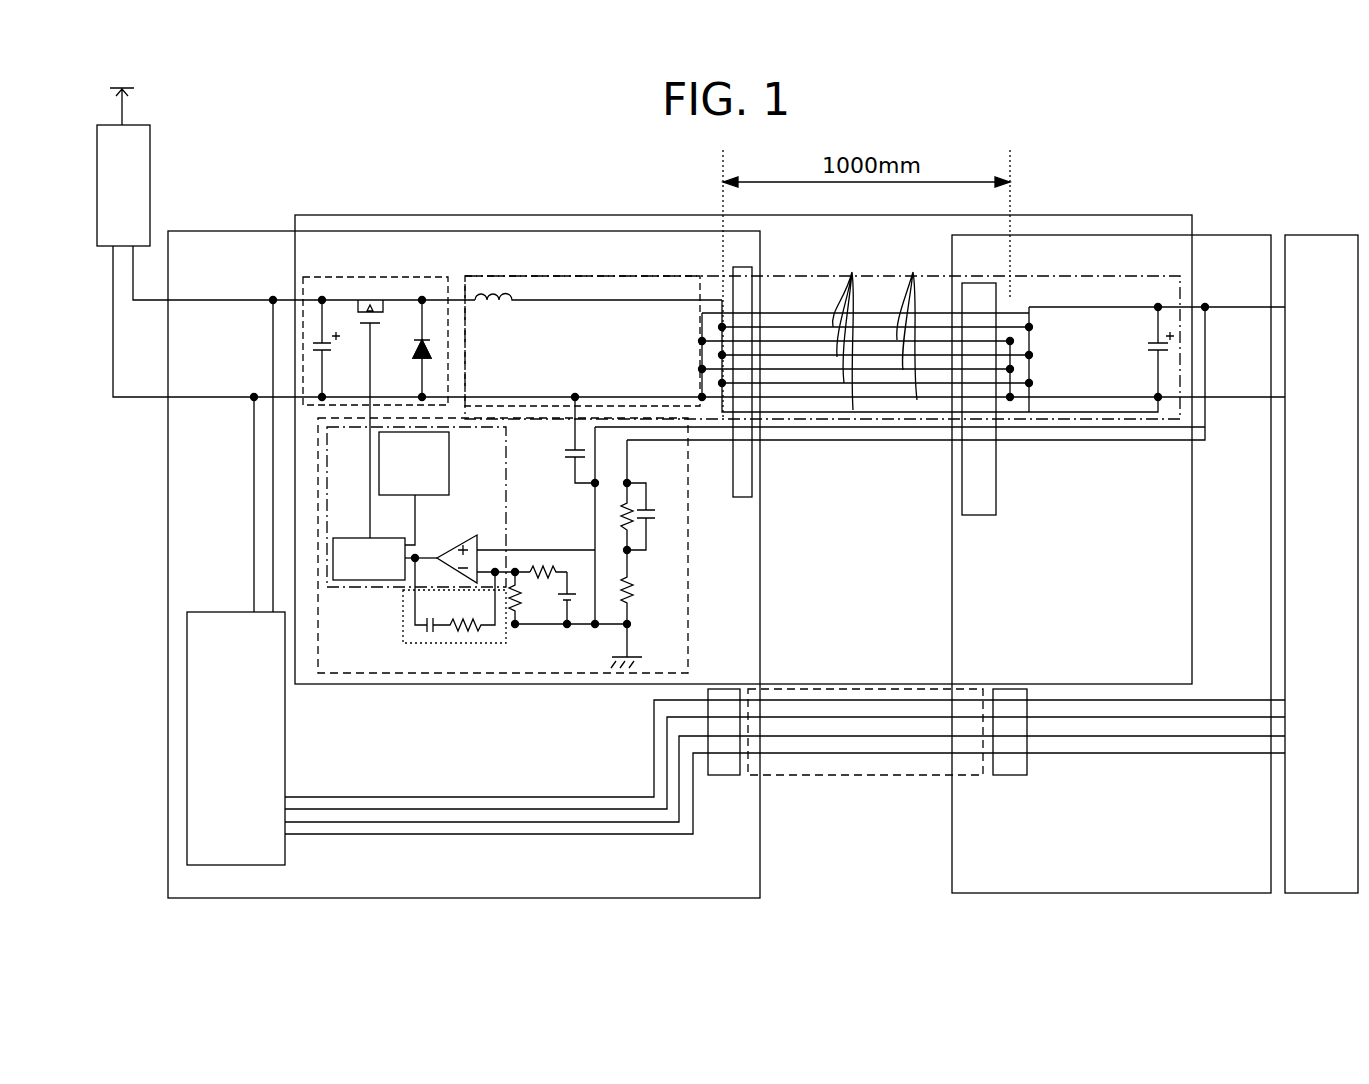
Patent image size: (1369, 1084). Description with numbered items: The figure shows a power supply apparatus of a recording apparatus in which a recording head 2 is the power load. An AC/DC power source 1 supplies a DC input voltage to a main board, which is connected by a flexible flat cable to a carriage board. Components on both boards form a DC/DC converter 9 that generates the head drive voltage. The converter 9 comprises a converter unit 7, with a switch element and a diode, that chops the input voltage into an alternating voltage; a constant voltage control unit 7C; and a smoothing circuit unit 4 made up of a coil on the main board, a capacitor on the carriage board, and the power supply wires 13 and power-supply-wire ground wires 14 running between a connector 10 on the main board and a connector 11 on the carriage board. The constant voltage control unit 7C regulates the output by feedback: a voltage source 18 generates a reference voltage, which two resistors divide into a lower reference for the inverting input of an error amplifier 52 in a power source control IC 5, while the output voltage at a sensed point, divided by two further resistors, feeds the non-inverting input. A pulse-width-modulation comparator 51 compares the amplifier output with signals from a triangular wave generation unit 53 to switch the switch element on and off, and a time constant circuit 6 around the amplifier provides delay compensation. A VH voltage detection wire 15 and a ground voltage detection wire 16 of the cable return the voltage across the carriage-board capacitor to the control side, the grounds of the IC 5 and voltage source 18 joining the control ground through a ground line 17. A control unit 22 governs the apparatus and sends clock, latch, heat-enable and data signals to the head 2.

The AC/DC power source 1 is at (97, 197).
The recording head 2 is at (1320, 235).
The smoothing circuit unit 4 is at (607, 278).
The power source control IC 5 is at (340, 587).
The time constant circuit 6 is at (403, 628).
The converter unit 7 is at (432, 278).
The constant voltage control unit 7C is at (440, 673).
The DC/DC converter 9 is at (515, 215).
The connector 10 is at (755, 480).
The connector 11 is at (962, 498).
The power supply wires 13 is at (850, 328).
The power-supply-wire ground wires 14 is at (911, 323).
The VH voltage detection wire 15 is at (855, 440).
The ground voltage detection wire 16 is at (905, 427).
The ground line 17 is at (567, 626).
The voltage source 18 is at (560, 598).
The control unit 22 is at (215, 612).
The PWM comparator 51 is at (350, 538).
The error amplifier 52 is at (445, 550).
The triangular wave generation unit 53 is at (379, 458).